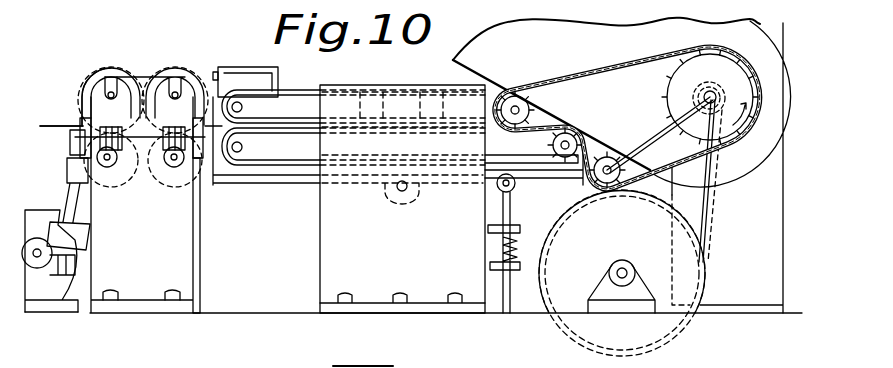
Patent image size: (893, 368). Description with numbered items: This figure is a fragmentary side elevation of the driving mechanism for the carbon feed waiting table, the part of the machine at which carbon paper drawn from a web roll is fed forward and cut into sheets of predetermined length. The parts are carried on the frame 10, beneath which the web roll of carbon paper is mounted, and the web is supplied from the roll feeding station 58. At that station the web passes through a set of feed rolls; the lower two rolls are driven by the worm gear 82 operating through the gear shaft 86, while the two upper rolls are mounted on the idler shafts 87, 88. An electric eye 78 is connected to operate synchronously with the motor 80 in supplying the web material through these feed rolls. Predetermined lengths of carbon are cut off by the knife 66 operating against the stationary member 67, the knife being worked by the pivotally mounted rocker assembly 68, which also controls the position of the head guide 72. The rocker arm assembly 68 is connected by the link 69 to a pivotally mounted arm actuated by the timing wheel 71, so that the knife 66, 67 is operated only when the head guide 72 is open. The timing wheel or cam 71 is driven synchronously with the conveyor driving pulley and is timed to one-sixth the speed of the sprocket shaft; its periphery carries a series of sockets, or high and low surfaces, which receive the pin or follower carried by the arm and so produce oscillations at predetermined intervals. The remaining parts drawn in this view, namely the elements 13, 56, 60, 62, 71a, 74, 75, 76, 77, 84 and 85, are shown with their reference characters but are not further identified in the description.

The frame 10 is at (783, 128).
The drive sprocket 13 is at (742, 85).
The feed table 56 is at (70, 125).
The roll feeding station 58 is at (134, 54).
The support plate 60 is at (306, 172).
The frame box 62 is at (335, 258).
The knife 66 is at (200, 165).
The stationary member 67 is at (214, 70).
The rocker assembly 68 is at (350, 185).
The link 69 is at (495, 268).
The timing wheel 71 is at (695, 292).
The connecting rod 71a is at (718, 203).
The head guide 72 is at (577, 175).
The drive chain 74 is at (633, 63).
The sprocket 75 is at (513, 92).
The idler sprocket 76 is at (568, 130).
The conveyor belts 77 is at (282, 92).
The electric eye 78 is at (400, 105).
The motor 80 is at (50, 296).
The worm gear 82 is at (72, 196).
The lower roller 84 is at (115, 192).
The lower roller 85 is at (177, 192).
The gear shaft 86 is at (146, 170).
The idler shaft 87 is at (88, 70).
The idler shaft 88 is at (184, 54).